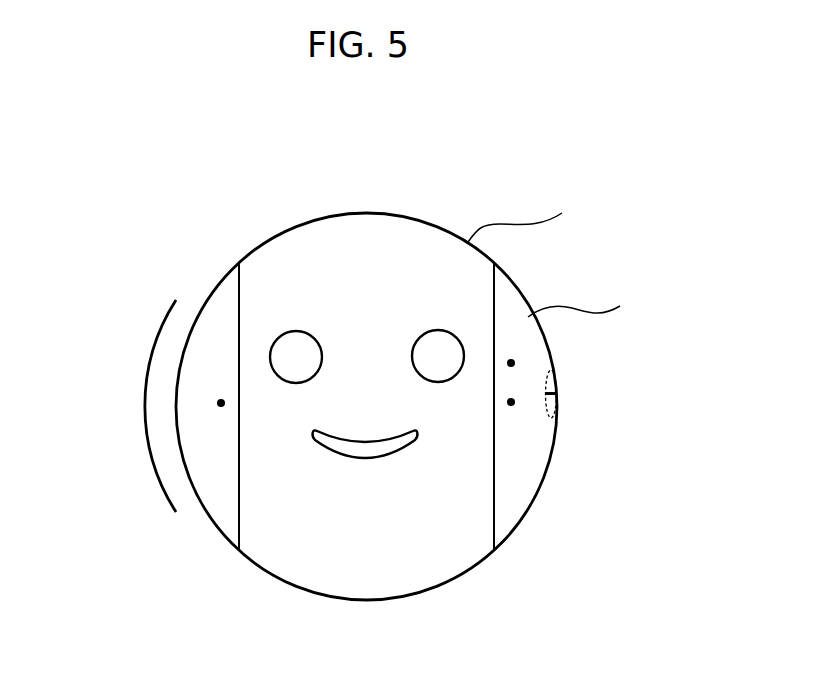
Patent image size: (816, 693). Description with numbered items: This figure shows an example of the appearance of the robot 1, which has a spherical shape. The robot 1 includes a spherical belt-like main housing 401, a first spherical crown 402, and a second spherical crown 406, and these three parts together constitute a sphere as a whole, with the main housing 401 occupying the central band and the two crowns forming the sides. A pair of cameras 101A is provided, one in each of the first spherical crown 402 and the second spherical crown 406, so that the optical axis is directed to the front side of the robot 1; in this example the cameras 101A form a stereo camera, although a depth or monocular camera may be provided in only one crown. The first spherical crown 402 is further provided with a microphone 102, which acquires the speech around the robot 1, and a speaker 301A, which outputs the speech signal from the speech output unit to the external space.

The robot 1 is at (378, 194).
The spherical belt-like main housing 401 is at (537, 221).
The first spherical crown 402 is at (596, 306).
The microphone 102 is at (511, 363).
The speaker 301A is at (557, 392).
The camera 101A is at (511, 402).
The second spherical crown 406 is at (197, 367).